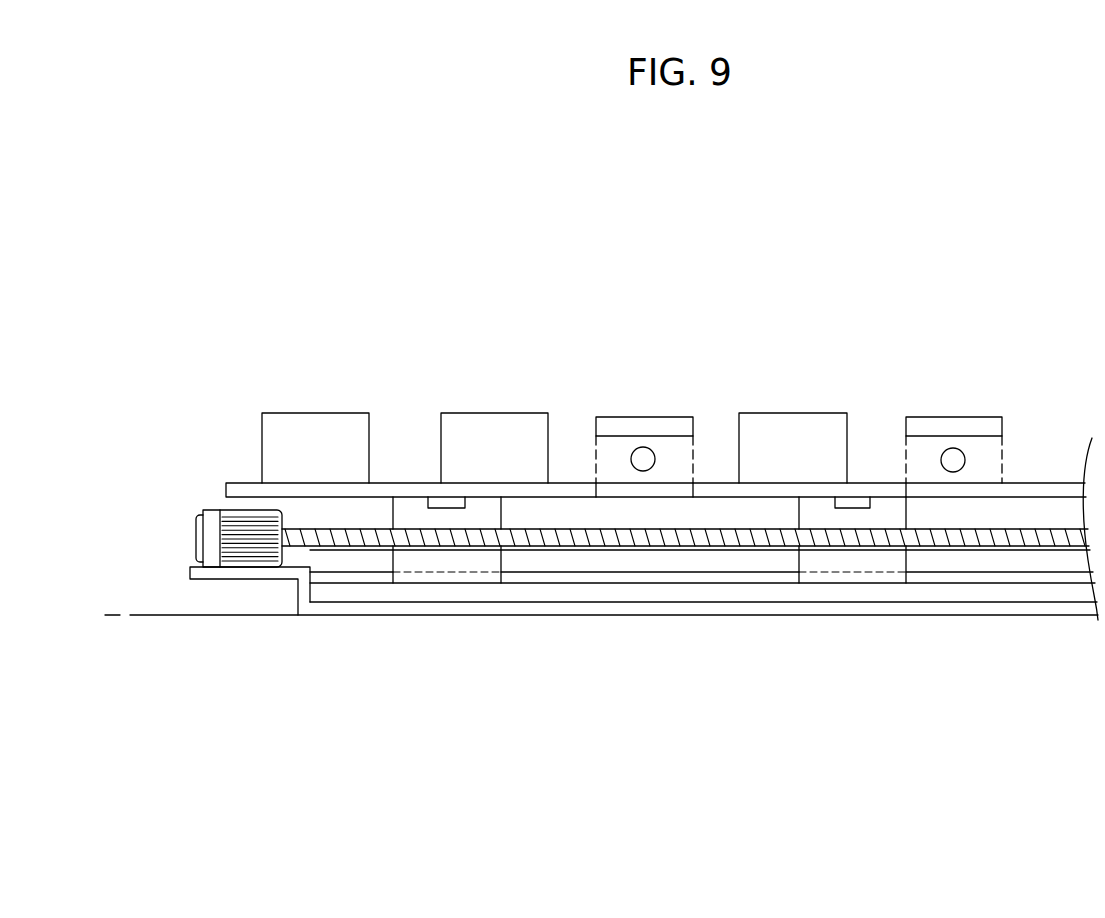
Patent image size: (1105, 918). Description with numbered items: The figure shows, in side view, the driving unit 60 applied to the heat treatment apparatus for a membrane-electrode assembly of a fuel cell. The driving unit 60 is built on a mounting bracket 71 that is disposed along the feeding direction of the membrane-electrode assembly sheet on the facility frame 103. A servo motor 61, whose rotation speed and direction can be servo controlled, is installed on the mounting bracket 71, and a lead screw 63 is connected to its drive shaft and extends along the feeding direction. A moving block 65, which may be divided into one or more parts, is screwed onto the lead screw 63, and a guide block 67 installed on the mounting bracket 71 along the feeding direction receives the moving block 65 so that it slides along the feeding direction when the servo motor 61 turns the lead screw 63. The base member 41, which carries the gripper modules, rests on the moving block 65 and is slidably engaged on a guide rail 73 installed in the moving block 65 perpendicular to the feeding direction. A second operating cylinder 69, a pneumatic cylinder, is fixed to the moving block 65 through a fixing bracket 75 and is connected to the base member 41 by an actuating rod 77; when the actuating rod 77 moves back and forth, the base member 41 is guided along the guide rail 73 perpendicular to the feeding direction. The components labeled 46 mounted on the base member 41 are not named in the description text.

The driving unit 60 is at (501, 318).
The base member 41 is at (243, 482).
The substrate holders 46 is at (314, 412).
The servo motor 61 is at (200, 536).
The lead screw 63 is at (420, 541).
The moving block 65 is at (502, 558).
The guide block 67 is at (722, 594).
The second operating cylinder 69 is at (643, 416).
The mounting bracket 71 is at (256, 573).
The guide rail 73 is at (450, 509).
The fixing bracket 75 is at (693, 458).
The actuating rod 77 is at (642, 458).
The facility frame 103 is at (180, 616).